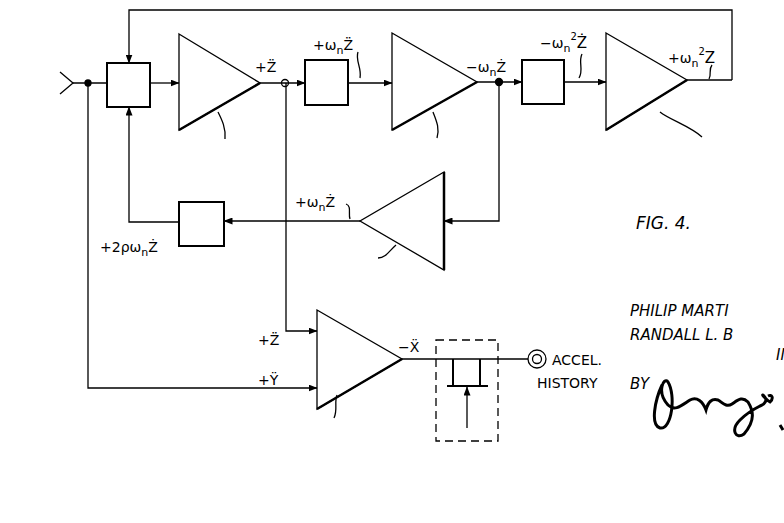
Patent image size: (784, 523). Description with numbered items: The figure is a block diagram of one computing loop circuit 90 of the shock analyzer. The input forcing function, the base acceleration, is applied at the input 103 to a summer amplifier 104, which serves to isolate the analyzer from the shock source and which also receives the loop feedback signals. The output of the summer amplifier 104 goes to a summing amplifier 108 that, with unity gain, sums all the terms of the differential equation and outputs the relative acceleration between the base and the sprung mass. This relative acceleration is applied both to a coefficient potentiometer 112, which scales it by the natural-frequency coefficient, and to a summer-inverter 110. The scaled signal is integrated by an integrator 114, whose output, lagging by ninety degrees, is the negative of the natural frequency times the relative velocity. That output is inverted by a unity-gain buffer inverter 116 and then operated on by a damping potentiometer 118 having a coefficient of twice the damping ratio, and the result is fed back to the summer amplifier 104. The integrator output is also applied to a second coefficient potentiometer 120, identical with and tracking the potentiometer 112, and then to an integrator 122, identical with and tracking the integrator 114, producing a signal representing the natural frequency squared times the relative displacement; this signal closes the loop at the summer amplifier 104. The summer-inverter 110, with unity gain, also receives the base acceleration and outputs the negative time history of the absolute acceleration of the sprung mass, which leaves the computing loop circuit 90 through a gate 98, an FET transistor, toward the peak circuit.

The computing loop circuit 90 is at (223, 425).
The gate 98 is at (490, 340).
The input 103 is at (66, 96).
The summer amplifier 104 is at (112, 62).
The summing amplifier 108 is at (194, 46).
The summer-inverter 110 is at (348, 330).
The coefficient potentiometer 112 is at (319, 106).
The integrator 114 is at (416, 46).
The buffer inverter 116 is at (446, 243).
The damping potentiometer 118 is at (205, 202).
The coefficient potentiometer 120 is at (545, 105).
The integrator 122 is at (634, 47).